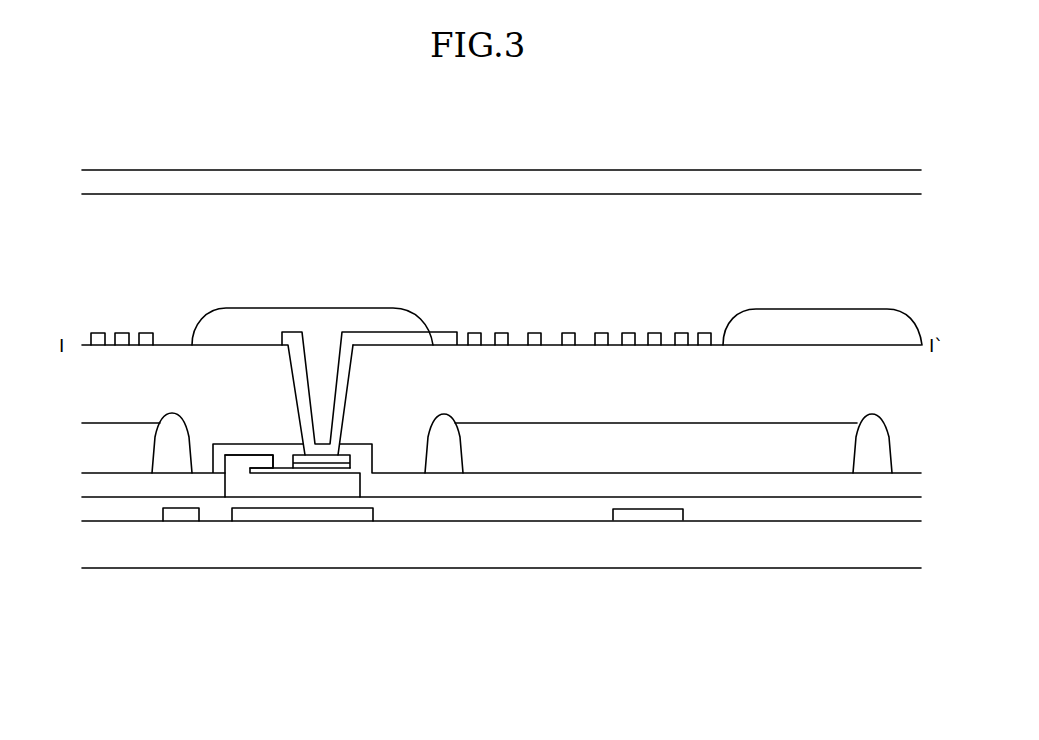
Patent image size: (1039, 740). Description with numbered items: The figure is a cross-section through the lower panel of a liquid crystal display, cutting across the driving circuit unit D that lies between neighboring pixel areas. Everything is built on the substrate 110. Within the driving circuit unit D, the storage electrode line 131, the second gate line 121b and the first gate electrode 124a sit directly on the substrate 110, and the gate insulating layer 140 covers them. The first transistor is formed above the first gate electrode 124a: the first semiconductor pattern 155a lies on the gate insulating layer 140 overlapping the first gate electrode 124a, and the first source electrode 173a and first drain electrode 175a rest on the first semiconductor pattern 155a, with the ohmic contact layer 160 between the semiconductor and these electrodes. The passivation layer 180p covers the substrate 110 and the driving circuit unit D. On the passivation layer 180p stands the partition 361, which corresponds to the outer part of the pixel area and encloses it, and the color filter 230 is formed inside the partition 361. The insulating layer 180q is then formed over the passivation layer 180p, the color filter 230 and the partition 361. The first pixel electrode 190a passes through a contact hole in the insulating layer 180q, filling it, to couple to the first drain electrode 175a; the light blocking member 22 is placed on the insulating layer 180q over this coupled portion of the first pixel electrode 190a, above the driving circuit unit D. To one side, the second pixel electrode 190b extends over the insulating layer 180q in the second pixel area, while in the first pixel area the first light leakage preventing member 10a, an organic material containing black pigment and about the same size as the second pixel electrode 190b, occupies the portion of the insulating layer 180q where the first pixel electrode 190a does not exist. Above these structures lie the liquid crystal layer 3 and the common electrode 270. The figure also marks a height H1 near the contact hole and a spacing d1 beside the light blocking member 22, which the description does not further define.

The common electrode 270 is at (907, 183).
The driving circuit unit D is at (219, 152).
The liquid crystal layer 3 is at (910, 254).
The second pixel electrode 190b is at (100, 337).
The light blocking member 22 is at (294, 323).
The insulating layer 180q is at (898, 383).
The height of contact hole H1 is at (352, 367).
The first pixel electrode 190a is at (500, 340).
The distance d1 is at (429, 316).
The first light leakage preventing member 10a is at (820, 323).
The partition 361 is at (875, 448).
The color filter 230 is at (573, 450).
The passivation layer 180p is at (905, 485).
The gate insulating layer 140 is at (907, 507).
The substrate 110 is at (907, 543).
The first semiconductor pattern 155a is at (343, 490).
The first source electrode 173a is at (240, 490).
The ohmic contact layer 160 is at (265, 473).
The first drain electrode 175a is at (310, 463).
The first gate electrode 124a is at (367, 517).
The second gate line 121b is at (175, 517).
The storage electrode line 131 is at (655, 515).